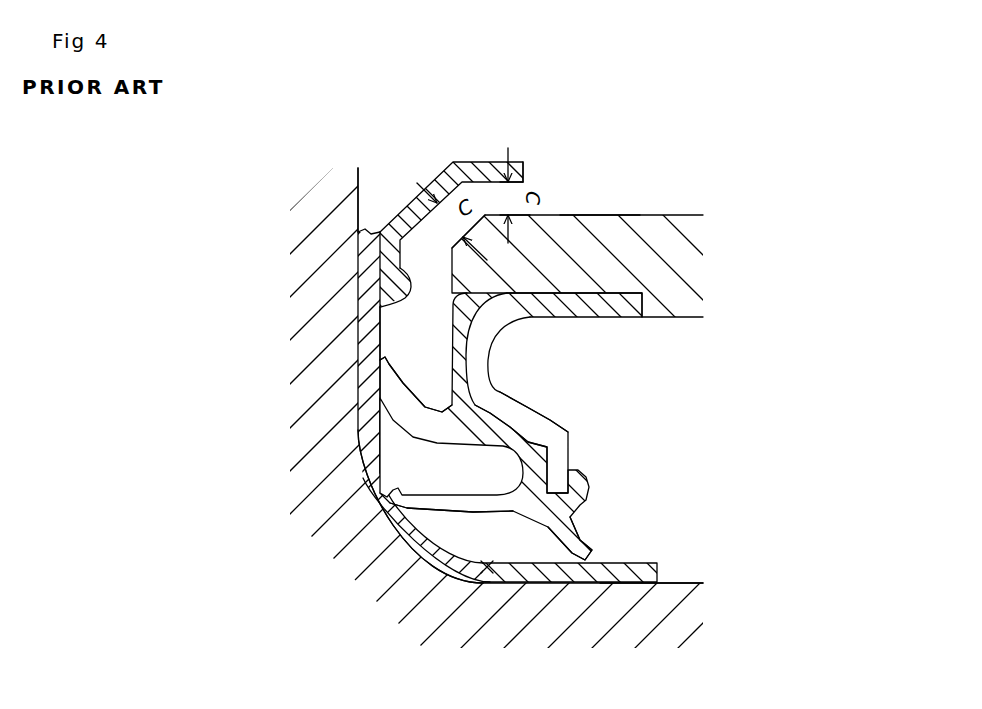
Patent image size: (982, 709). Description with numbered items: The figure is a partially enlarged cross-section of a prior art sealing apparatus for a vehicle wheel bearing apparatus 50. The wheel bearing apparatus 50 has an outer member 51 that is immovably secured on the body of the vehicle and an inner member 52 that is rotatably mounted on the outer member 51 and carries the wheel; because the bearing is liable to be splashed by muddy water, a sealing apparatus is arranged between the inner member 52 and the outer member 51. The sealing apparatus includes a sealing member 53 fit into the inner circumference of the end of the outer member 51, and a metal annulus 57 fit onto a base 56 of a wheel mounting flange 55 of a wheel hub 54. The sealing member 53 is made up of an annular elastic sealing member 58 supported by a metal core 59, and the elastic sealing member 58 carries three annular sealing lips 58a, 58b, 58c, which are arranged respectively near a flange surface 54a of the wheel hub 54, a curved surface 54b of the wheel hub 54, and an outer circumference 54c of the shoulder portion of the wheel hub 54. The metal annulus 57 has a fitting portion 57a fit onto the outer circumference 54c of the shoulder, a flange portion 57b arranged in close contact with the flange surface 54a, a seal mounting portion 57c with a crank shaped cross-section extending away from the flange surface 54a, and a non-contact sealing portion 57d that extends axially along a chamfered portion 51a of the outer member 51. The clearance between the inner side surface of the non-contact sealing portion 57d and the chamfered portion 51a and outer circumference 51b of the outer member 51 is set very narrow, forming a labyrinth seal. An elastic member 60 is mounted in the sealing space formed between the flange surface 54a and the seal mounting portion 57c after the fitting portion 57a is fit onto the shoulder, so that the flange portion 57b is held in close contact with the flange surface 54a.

The wheel bearing apparatus 50 is at (748, 165).
The outer member 51 is at (682, 212).
The chamfered portion 51a is at (483, 213).
The outer circumference 51b is at (593, 213).
The inner member 52 is at (621, 689).
The sealing member 53 is at (573, 437).
The wheel hub 54 is at (390, 598).
The flange surface 54a is at (362, 193).
The curved surface 54b is at (458, 560).
The outer circumference of the shoulder portion 54c is at (677, 580).
The wheel mounting flange 55 is at (306, 227).
The base 56 is at (490, 566).
The metal annulus 57 is at (453, 158).
The fitting portion 57a is at (633, 567).
The flange portion 57b is at (390, 360).
The seal mounting portion 57c is at (380, 312).
The non-contact sealing portion 57d is at (513, 173).
The elastic sealing member 58 is at (213, 448).
The sealing lip 58a is at (378, 388).
The sealing lip 58b is at (398, 490).
The sealing lip 58c is at (563, 547).
The metal core 59 is at (617, 318).
The elastic member 60 is at (370, 235).